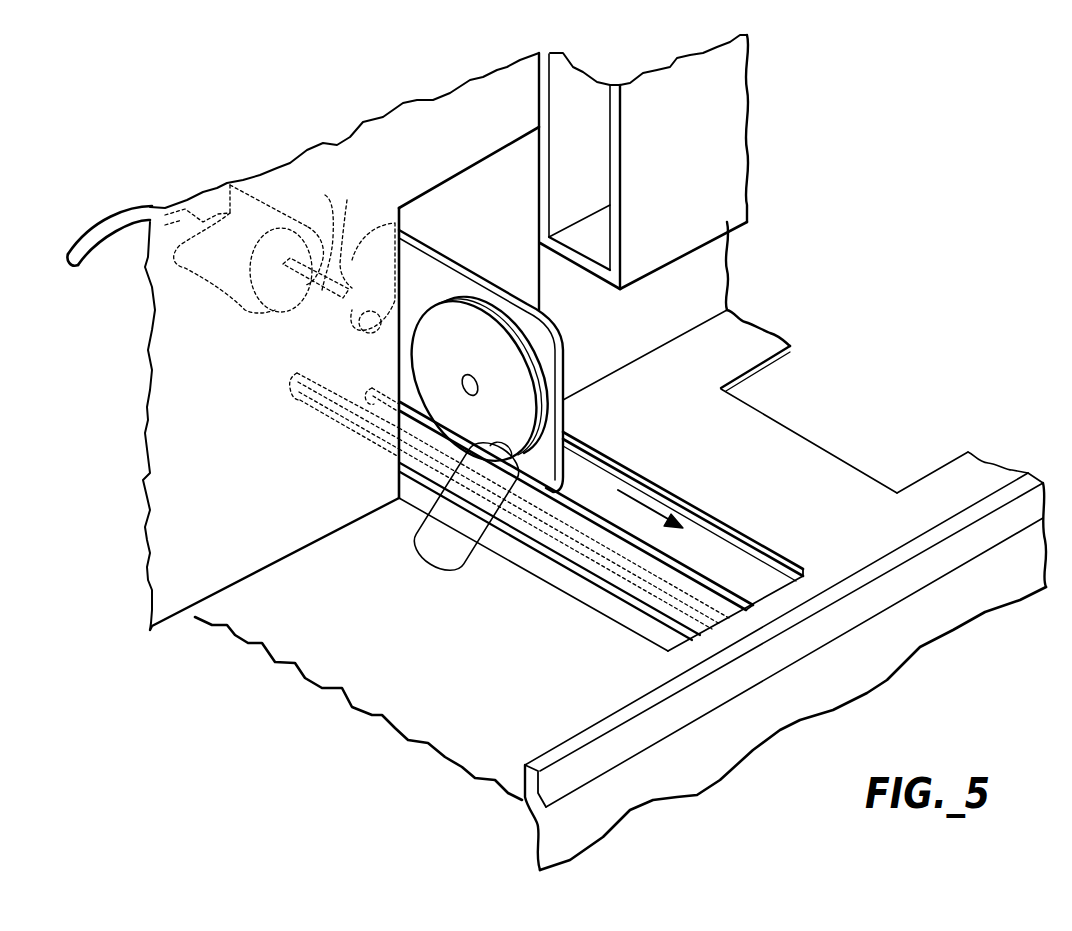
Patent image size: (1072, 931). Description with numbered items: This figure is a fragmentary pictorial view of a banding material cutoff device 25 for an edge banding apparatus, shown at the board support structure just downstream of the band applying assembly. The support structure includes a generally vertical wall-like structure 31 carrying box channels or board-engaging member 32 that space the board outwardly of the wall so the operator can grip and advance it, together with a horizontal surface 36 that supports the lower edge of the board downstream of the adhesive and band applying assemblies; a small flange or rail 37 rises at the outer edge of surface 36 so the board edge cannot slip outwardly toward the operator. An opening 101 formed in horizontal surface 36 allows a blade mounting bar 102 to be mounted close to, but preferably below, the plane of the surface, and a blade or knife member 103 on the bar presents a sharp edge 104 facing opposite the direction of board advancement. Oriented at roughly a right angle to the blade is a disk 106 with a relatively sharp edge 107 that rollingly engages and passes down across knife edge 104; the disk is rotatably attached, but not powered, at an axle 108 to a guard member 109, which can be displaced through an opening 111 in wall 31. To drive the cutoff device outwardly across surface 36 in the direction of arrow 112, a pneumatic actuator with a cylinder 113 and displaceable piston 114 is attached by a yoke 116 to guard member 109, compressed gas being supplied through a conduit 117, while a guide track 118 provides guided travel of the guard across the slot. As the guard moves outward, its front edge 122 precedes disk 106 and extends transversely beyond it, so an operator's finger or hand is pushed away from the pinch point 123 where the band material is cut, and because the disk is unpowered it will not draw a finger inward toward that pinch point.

The cutoff device 25 is at (708, 286).
The wall-like structure 31 is at (370, 133).
The board-engaging member 32 is at (630, 250).
The horizontal surface 36 is at (791, 476).
The rail 37 is at (997, 500).
The opening 101 is at (648, 645).
The blade mounting bar 102 is at (537, 543).
The blade 103 is at (717, 600).
The sharp edge 104 is at (531, 526).
The disk 106 is at (502, 407).
The sharp edge of disk 107 is at (440, 313).
The axle 108 is at (472, 375).
The guard member 109 is at (398, 260).
The opening 111 is at (460, 178).
The arrow 112 is at (645, 500).
The cylinder 113 is at (227, 302).
The piston 114 is at (325, 195).
The yoke 116 is at (358, 343).
The conduit 117 is at (107, 213).
The guide track 118 is at (685, 550).
The front edge 122 is at (575, 417).
The pinch point 123 is at (433, 520).